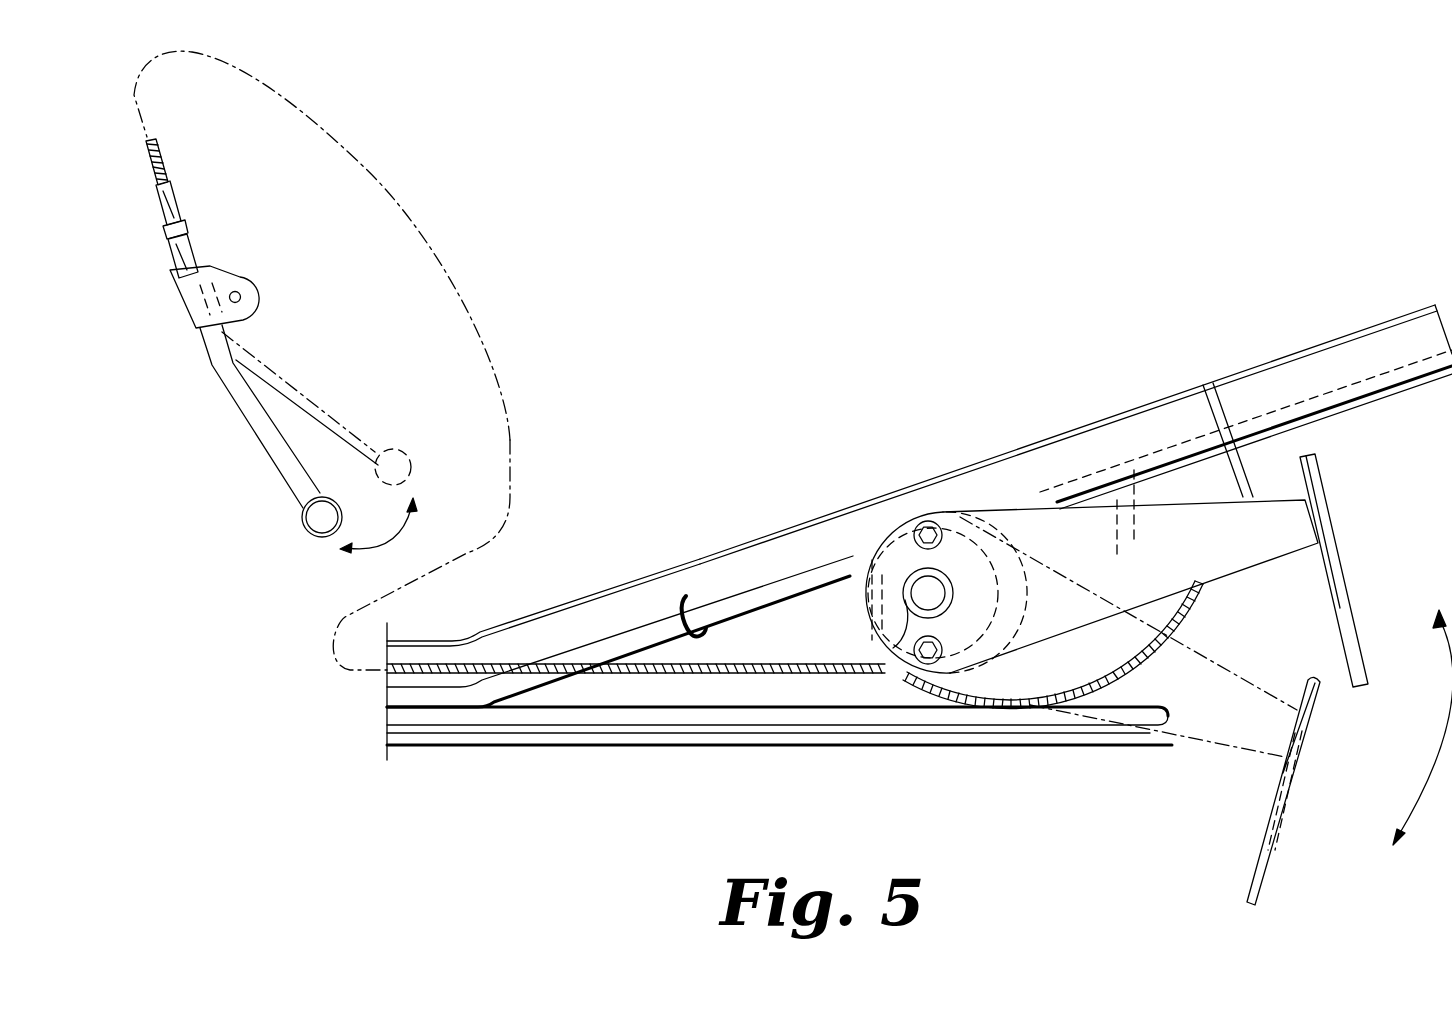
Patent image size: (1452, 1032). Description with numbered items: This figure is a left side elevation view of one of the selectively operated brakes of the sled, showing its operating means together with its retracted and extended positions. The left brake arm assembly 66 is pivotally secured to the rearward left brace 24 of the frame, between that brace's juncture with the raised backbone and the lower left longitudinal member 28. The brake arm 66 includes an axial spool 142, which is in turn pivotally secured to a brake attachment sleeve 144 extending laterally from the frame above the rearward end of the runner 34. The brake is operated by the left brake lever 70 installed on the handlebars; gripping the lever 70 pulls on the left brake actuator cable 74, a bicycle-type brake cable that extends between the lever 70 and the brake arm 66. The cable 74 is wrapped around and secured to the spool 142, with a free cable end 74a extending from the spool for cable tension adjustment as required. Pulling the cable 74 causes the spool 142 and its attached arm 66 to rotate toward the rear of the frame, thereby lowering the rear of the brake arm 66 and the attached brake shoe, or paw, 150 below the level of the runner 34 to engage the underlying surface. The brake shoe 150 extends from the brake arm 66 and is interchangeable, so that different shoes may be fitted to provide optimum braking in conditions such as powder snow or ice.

The rearward left brace 24 is at (1352, 322).
The left longitudinal member 28 is at (423, 641).
The runner 34 is at (742, 746).
The left brake arm assembly 66 is at (1263, 563).
The left brake lever 70 is at (280, 427).
The left brake actuator cable 74 is at (415, 247).
The free cable end 74a is at (1130, 667).
The axial spool 142 is at (878, 565).
The brake attachment sleeve 144 is at (897, 647).
The brake shoe (paw) 150 is at (1365, 683).